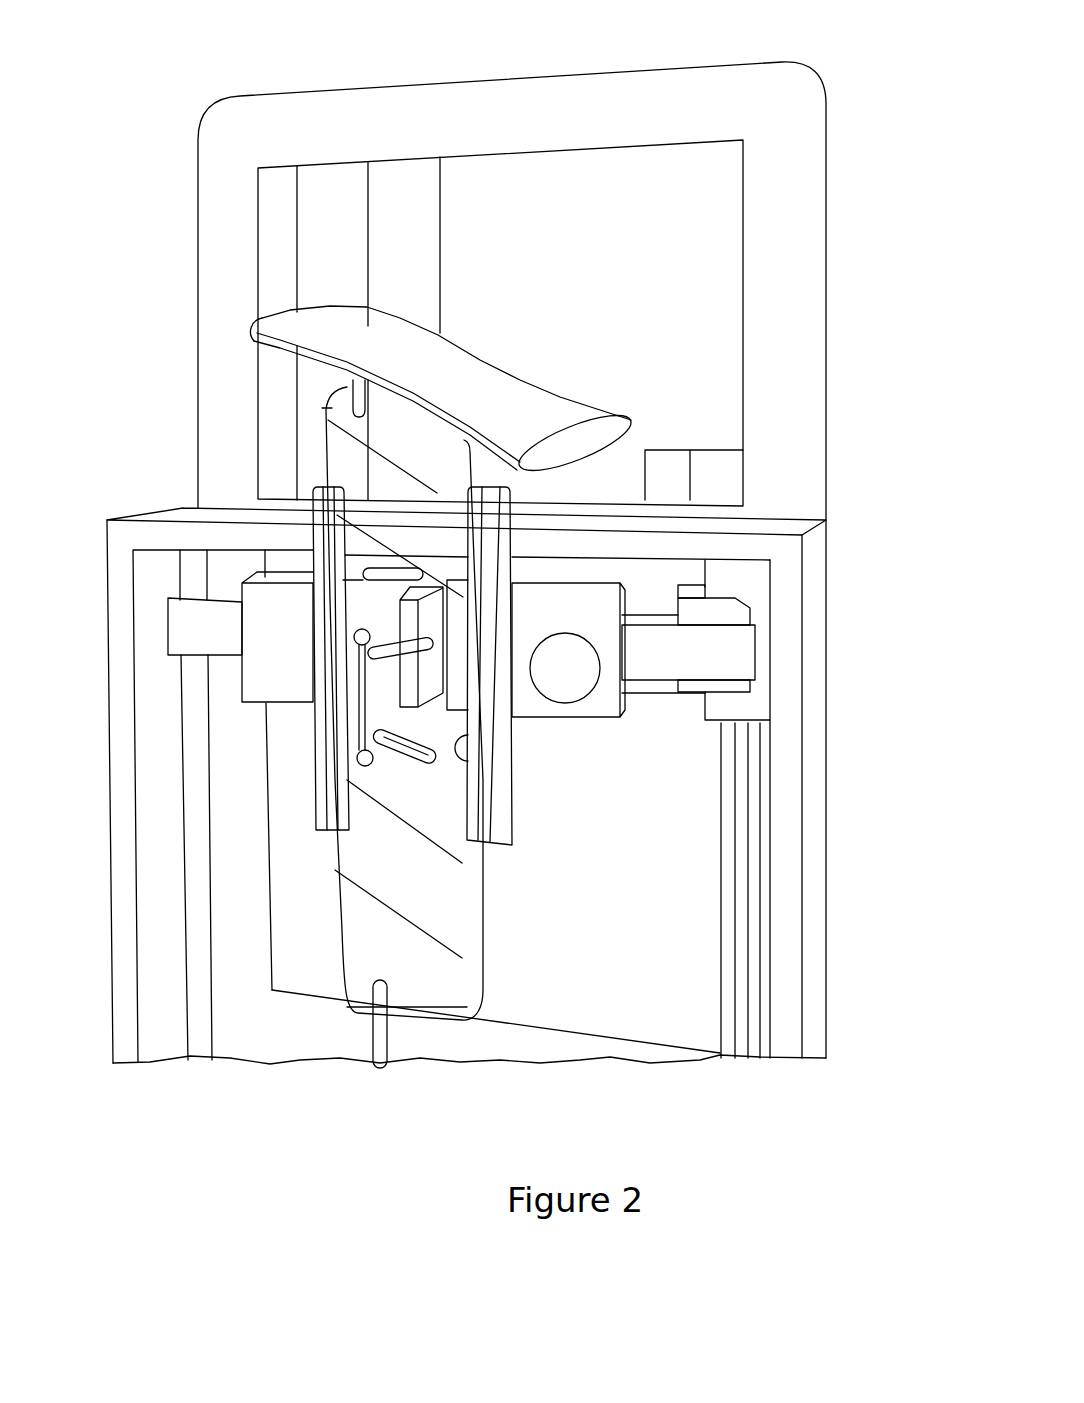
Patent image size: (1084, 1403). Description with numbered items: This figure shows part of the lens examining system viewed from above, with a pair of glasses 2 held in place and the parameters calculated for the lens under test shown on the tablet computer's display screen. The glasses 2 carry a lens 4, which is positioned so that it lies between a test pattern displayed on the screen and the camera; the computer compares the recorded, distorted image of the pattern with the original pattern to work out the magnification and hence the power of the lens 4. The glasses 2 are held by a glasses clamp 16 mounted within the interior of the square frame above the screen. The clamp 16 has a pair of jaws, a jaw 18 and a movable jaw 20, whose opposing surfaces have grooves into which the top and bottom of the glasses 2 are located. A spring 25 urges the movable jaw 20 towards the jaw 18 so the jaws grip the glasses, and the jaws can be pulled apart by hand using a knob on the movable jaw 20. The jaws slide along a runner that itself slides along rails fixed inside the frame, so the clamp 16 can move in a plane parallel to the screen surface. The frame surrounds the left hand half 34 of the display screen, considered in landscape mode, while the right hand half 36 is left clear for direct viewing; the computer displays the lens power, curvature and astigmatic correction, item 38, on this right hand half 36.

The pair of glasses 2 is at (380, 1037).
The lens 4 is at (365, 872).
The glasses clamp 16 is at (655, 620).
The jaw 18 is at (287, 612).
The movable jaw 20 is at (613, 695).
The spring 25 is at (395, 582).
The left hand half of the display screen 34 is at (703, 840).
The right hand half of the display screen 36 is at (705, 290).
The displayed lens parameters 38 is at (477, 165).